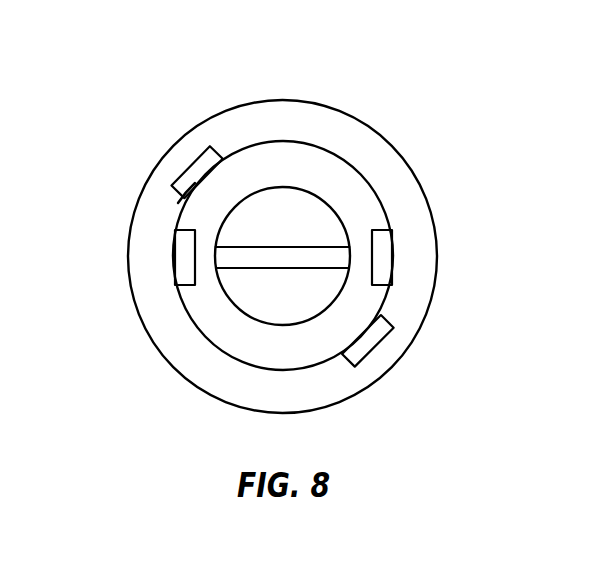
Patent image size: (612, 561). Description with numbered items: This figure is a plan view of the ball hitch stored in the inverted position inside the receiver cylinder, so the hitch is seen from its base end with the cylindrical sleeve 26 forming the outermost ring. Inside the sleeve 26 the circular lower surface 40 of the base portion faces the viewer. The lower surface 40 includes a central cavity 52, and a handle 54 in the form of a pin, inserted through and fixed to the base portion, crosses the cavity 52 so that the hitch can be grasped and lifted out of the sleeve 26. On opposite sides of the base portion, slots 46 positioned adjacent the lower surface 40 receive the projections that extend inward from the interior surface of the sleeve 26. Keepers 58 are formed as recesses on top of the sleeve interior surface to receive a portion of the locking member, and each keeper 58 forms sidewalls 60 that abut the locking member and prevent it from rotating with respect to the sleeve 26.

The sleeve 26 is at (287, 118).
The lower surface 40 is at (190, 318).
The cavity 52 is at (336, 207).
The handle 54 is at (323, 255).
The slot 46 is at (185, 250).
The keeper 58 is at (192, 160).
The sidewalls 60 is at (185, 195).